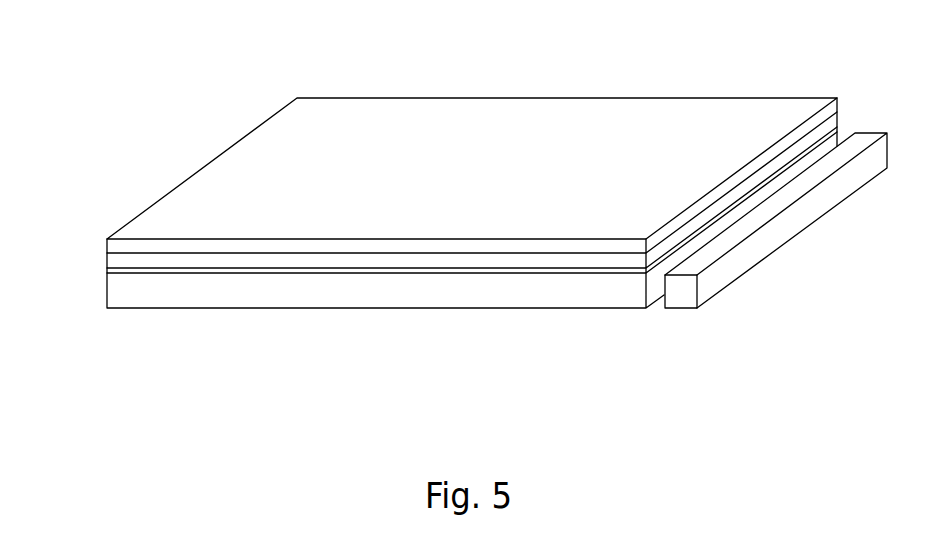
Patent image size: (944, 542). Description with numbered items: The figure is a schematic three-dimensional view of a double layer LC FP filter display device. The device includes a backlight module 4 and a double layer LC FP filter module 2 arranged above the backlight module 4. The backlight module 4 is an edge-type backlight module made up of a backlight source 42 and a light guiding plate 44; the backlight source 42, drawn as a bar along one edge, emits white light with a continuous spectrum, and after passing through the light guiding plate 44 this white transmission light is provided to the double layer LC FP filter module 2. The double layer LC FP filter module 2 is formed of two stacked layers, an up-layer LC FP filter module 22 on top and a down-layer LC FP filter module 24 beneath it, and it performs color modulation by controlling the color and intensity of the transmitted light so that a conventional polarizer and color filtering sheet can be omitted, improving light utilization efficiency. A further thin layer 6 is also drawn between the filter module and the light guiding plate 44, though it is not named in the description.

The double layer LC FP filter module 2 is at (425, 183).
The up-layer LC FP filter module 22 is at (270, 208).
The down-layer LC FP filter module 24 is at (94, 123).
The thin film layer 6 is at (377, 271).
The backlight module 4 is at (497, 280).
The light guiding plate 44 is at (595, 292).
The backlight source 42 is at (758, 257).